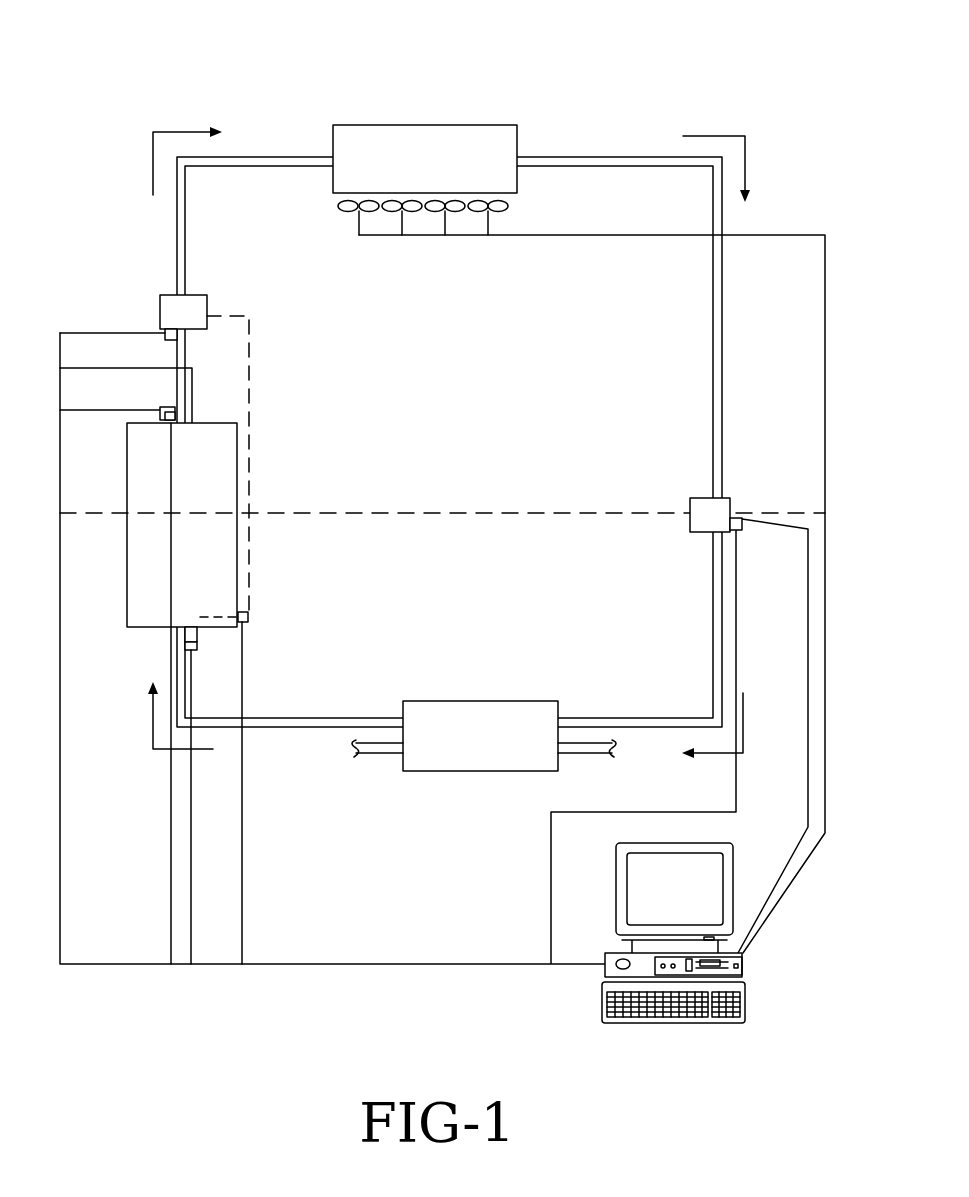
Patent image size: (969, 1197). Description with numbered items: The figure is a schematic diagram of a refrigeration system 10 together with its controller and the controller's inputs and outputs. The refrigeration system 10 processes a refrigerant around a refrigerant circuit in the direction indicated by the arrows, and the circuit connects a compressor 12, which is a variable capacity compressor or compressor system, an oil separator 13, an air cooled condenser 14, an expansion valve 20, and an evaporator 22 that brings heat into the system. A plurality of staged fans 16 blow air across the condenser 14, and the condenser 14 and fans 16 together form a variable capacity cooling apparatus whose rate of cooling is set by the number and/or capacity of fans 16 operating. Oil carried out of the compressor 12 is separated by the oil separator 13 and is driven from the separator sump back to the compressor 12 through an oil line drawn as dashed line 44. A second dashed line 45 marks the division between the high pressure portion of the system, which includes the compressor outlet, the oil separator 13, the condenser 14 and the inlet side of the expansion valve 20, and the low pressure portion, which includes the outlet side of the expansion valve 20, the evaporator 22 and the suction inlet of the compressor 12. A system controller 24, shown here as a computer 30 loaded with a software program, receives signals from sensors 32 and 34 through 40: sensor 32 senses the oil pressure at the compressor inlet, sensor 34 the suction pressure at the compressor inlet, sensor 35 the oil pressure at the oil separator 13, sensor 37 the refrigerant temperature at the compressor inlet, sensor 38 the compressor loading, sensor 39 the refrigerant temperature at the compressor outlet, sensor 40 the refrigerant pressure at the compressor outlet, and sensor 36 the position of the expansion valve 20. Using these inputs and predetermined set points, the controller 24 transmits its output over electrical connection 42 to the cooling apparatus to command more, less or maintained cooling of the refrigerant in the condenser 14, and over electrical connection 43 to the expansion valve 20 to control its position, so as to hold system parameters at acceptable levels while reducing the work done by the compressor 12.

The refrigeration system 10 is at (376, 100).
The compressor 12 is at (143, 585).
The oil separator 13 is at (165, 315).
The condenser 14 is at (450, 135).
The variable capacity fan 16 is at (335, 222).
The expansion valve 20 is at (732, 505).
The evaporator 22 is at (458, 755).
The system controller 24 is at (643, 890).
The computer 30 is at (617, 972).
The sensor 32 is at (248, 612).
The sensor 34 is at (197, 632).
The sensor 35 is at (165, 333).
The sensor 36 is at (745, 528).
The sensor 37 is at (197, 645).
The sensor 38 is at (172, 420).
The sensor 39 is at (165, 410).
The sensor 40 is at (190, 418).
The electrical connection to cooling apparatus 42 is at (826, 730).
The electrical connection to expansion valve 43 is at (807, 698).
The oil line 44 is at (249, 370).
The dashed line 45 is at (353, 512).